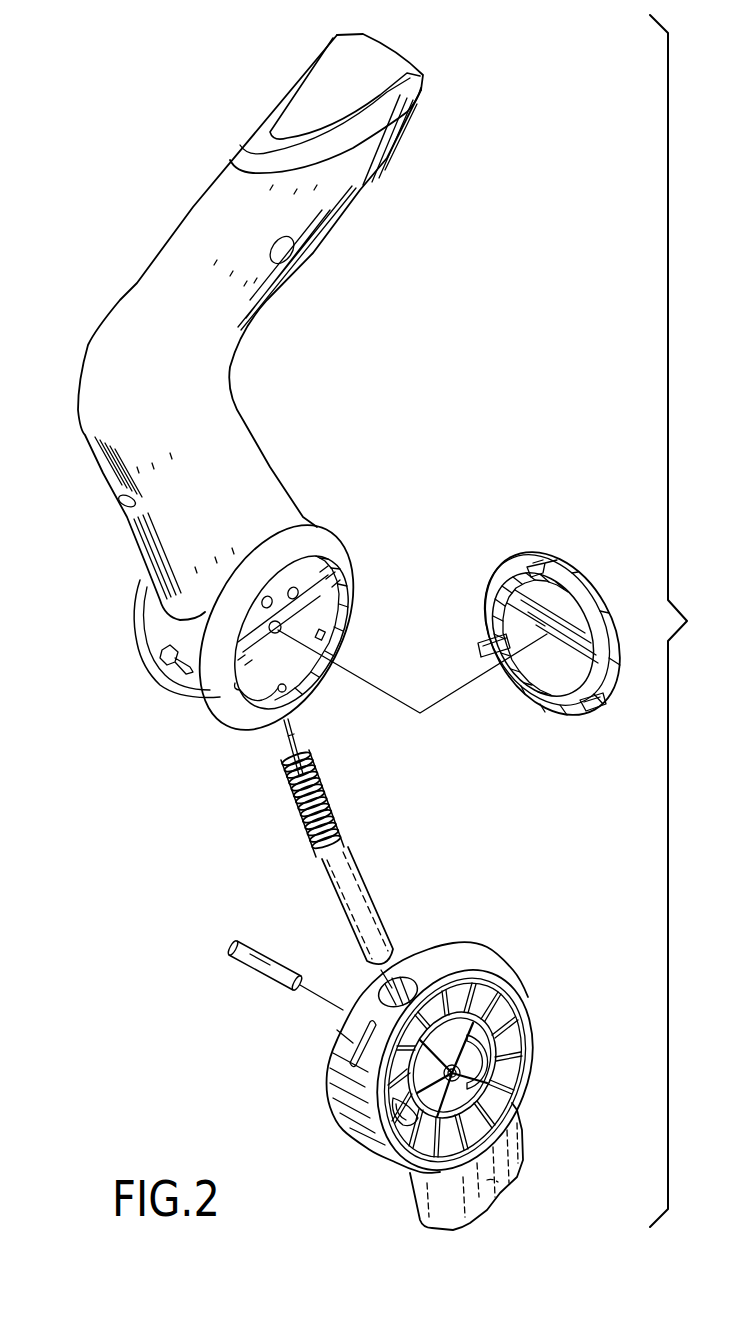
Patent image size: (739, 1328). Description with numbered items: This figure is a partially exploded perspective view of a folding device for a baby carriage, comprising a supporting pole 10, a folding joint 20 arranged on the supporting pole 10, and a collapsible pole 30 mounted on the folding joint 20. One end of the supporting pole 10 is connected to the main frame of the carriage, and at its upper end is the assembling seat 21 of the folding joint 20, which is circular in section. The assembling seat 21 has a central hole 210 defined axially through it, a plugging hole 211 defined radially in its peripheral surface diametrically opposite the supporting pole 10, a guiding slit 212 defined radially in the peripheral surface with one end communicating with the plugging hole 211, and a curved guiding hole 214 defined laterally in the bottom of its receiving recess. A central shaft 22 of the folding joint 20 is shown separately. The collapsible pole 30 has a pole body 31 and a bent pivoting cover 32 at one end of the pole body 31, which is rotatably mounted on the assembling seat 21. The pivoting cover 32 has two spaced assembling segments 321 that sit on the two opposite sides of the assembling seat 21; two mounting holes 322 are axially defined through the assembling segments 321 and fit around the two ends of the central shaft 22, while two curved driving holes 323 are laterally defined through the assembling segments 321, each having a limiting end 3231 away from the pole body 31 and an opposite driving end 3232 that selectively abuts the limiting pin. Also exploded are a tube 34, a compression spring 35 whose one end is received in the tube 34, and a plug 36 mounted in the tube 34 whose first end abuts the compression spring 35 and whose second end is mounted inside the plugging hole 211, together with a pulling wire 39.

The supporting pole 10 is at (533, 1138).
The folding joint 20 is at (535, 997).
The assembling seat 21 is at (533, 1077).
The central shaft 22 is at (260, 967).
The collapsible pole 30 is at (182, 185).
The pole body 31 is at (317, 82).
The pivoting cover 32 is at (143, 297).
The tube 34 is at (370, 882).
The compression spring 35 is at (303, 818).
The plug 36 is at (353, 900).
The pulling wire 39 is at (294, 742).
The central hole 210 is at (458, 1072).
The plugging hole 211 is at (414, 985).
The guiding slit 212 is at (377, 1022).
The guiding hole 214 is at (405, 1118).
The assembling segments 321 is at (350, 570).
The mounting holes 322 is at (282, 626).
The driving holes 323 is at (262, 722).
The limiting end 3231 is at (287, 690).
The driving end 3232 is at (235, 695).